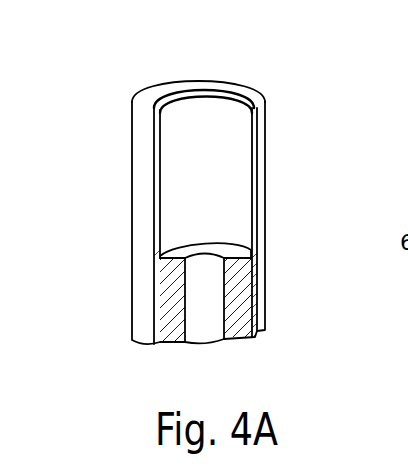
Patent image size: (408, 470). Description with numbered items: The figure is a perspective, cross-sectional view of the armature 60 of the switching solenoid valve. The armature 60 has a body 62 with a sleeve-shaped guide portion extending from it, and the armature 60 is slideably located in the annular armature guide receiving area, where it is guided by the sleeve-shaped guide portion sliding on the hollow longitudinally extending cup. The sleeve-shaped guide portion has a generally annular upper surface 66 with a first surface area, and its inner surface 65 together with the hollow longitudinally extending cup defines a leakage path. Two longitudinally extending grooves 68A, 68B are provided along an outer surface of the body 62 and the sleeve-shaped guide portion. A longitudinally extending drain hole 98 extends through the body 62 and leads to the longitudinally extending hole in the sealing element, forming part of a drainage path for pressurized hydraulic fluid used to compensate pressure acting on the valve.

The armature 60 is at (272, 302).
The body 62 is at (162, 311).
The inner surface 65 is at (160, 138).
The annular upper surface 66 is at (227, 80).
The longitudinally extending groove 68A is at (260, 130).
The longitudinally extending groove 68B is at (138, 140).
The longitudinally extending drain hole 98 is at (200, 327).